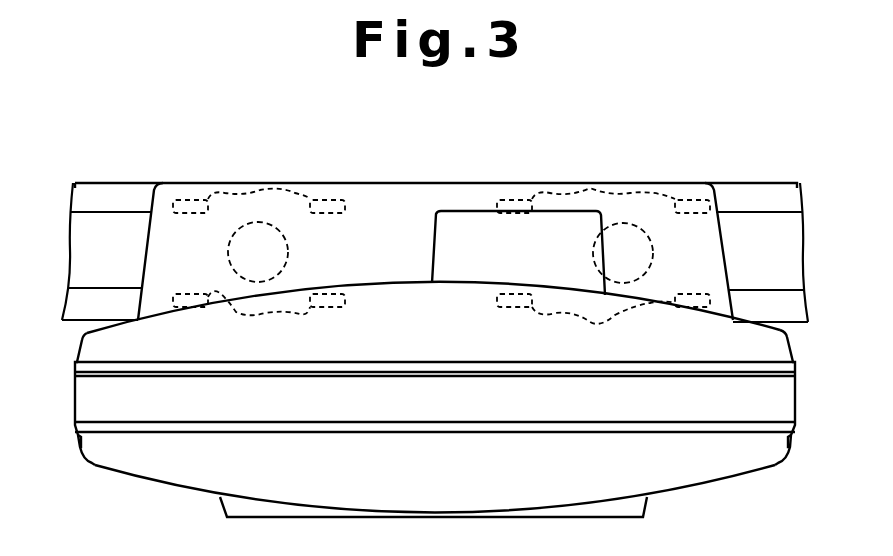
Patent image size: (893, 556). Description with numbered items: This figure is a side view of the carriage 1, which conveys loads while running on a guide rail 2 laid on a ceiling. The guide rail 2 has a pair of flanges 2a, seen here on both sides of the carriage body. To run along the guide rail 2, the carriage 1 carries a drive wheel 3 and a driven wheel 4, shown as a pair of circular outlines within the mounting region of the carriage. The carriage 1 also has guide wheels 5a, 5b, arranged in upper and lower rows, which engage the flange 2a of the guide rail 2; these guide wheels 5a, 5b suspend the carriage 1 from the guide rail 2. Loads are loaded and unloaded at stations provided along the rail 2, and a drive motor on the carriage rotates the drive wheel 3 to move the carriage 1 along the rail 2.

The carriage 1 is at (714, 499).
The guide rail 2 is at (746, 182).
The flanges 2a is at (116, 190).
The drive wheel 3 is at (289, 252).
The driven wheel 4 is at (650, 268).
The guide wheels 5a is at (257, 182).
The guide wheels 5b is at (243, 318).